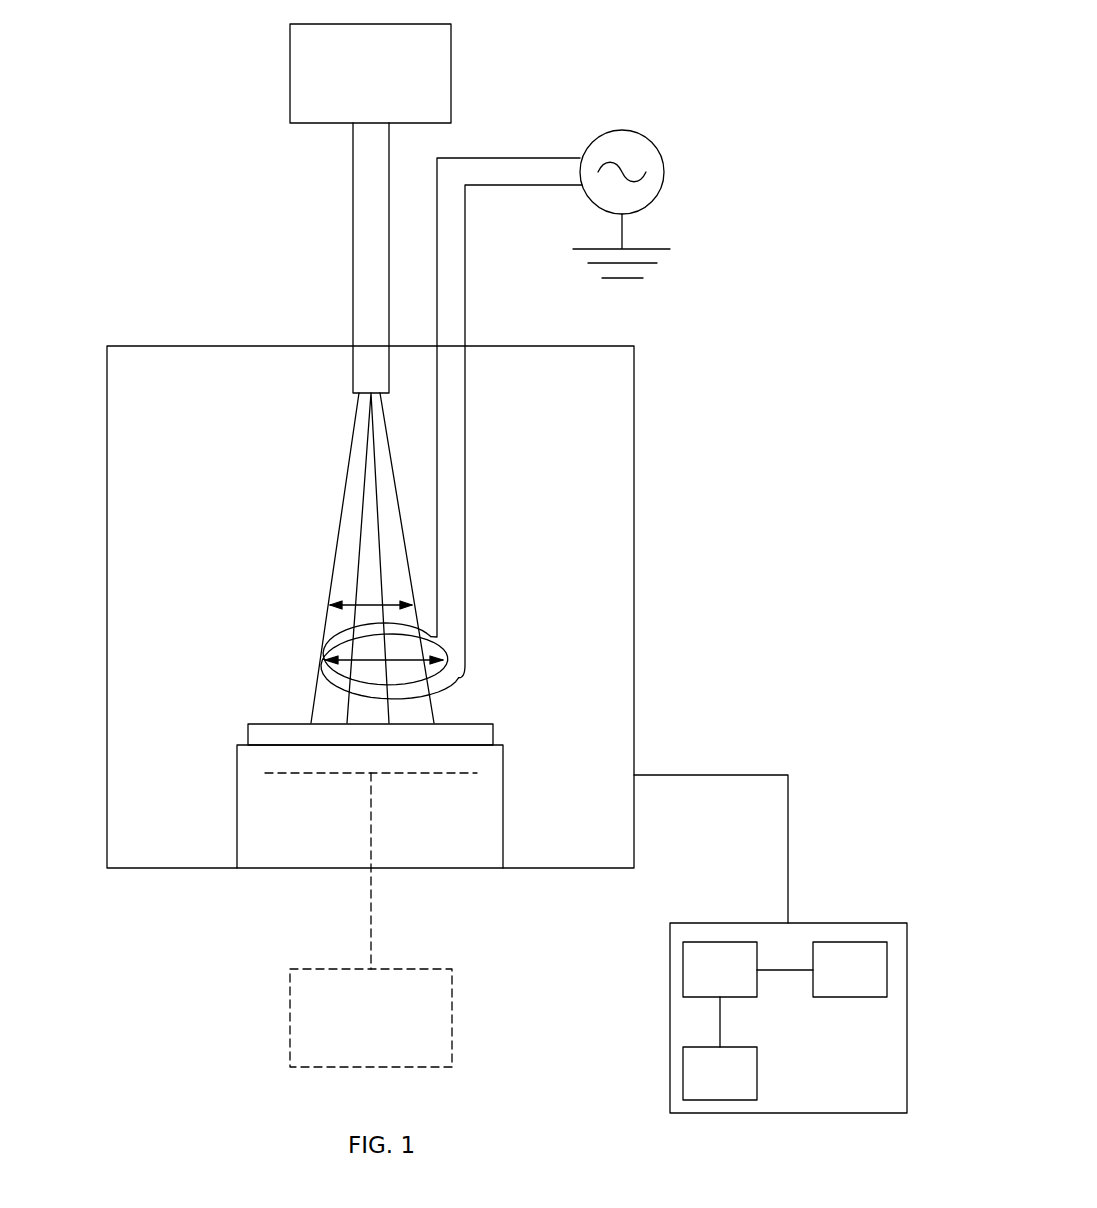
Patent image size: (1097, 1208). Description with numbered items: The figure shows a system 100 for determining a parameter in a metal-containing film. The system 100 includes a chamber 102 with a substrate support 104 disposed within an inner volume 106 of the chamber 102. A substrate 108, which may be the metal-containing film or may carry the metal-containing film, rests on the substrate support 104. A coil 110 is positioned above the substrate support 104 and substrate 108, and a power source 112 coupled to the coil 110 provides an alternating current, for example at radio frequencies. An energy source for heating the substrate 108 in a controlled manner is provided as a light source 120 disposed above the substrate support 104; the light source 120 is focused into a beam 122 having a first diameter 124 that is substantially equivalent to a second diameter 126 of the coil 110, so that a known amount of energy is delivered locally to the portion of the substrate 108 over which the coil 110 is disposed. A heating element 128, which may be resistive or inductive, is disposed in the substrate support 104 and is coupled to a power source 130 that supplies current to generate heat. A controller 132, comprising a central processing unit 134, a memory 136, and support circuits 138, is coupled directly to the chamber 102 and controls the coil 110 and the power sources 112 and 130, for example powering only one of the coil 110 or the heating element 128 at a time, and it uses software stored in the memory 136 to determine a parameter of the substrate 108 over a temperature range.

The system 100 is at (668, 58).
The chamber 102 is at (634, 403).
The substrate support 104 is at (503, 787).
The inner volume 106 is at (195, 520).
The substrate 108 is at (497, 733).
The coil 110 is at (465, 414).
The power source 112 is at (665, 171).
The light source 120 is at (352, 82).
The beam 122 is at (352, 458).
The first diameter 124 is at (360, 605).
The second diameter 126 is at (405, 662).
The heating element 128 is at (440, 778).
The power source 130 is at (352, 1028).
The controller 132 is at (788, 1018).
The central processing unit 134 is at (702, 981).
The memory 136 is at (832, 981).
The support circuits 138 is at (702, 1086).